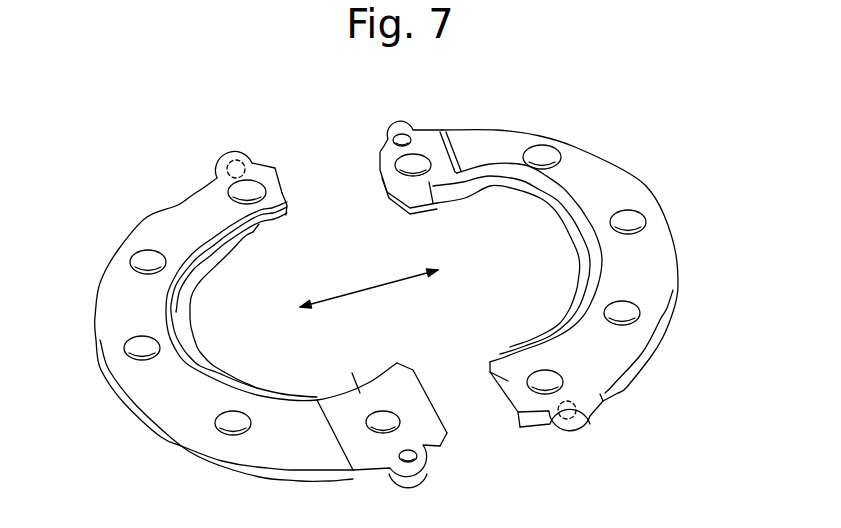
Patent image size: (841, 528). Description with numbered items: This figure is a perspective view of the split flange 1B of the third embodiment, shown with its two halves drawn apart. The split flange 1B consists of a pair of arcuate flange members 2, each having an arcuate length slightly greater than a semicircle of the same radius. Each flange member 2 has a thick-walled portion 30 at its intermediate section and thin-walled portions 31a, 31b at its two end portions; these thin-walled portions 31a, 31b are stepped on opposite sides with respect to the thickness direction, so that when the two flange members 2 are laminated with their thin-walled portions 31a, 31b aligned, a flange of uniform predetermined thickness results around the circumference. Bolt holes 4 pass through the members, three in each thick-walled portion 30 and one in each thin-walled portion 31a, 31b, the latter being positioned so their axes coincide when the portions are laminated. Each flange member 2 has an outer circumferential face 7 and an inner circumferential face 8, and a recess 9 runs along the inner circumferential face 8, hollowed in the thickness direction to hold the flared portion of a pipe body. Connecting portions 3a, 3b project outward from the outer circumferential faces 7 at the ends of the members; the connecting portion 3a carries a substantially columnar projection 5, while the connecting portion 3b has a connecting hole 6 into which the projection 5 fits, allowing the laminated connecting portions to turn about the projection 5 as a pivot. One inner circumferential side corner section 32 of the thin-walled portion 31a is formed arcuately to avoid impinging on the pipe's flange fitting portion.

The split flange 1B is at (712, 190).
The flange member 2 is at (146, 230).
The thick-walled portion 30 is at (118, 293).
The outer circumferential face 7 is at (244, 470).
The inner circumferential face 8 is at (192, 290).
The recess 9 is at (193, 278).
The bolt hole 4 is at (138, 341).
The connecting portion 3a is at (250, 168).
The connecting portion 3b is at (395, 463).
The projection 5 is at (208, 173).
The connecting hole 6 is at (447, 440).
The thin-walled portion 31a is at (253, 233).
The thin-walled portion 31b is at (360, 393).
The inner circumferential side corner section 32 is at (283, 208).